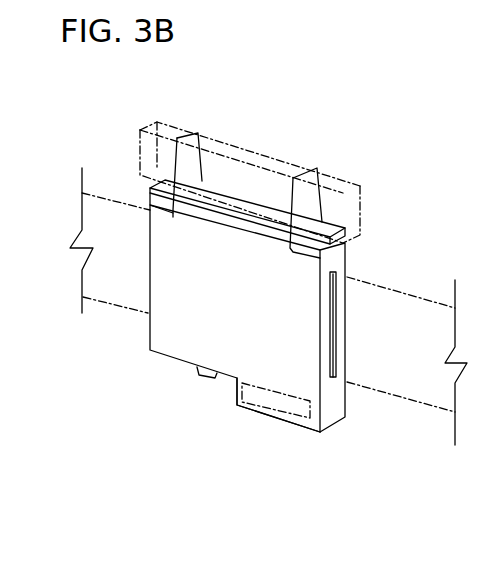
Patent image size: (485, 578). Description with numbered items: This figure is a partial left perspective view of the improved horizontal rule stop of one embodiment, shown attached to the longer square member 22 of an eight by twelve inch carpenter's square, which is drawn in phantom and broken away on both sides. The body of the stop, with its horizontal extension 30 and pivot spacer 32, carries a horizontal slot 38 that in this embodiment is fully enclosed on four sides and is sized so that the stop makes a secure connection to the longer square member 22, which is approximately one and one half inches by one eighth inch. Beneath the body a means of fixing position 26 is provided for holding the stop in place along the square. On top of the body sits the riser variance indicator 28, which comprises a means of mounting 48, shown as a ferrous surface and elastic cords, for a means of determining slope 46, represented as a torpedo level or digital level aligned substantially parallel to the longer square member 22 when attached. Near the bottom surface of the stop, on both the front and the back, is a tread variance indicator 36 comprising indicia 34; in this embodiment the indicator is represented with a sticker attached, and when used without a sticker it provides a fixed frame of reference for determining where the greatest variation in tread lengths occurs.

The longer square member 22 is at (107, 303).
The means of fixing position 26 is at (200, 376).
The riser variance indicator 28 is at (307, 118).
The horizontal extension 30 is at (210, 313).
The pivot spacer 32 is at (333, 402).
The indicia 34 is at (277, 413).
The tread variance indicator 36 is at (300, 472).
The horizontal slot 38 is at (334, 333).
The means of determining slope 46 is at (288, 163).
The means of mounting 48 is at (314, 198).